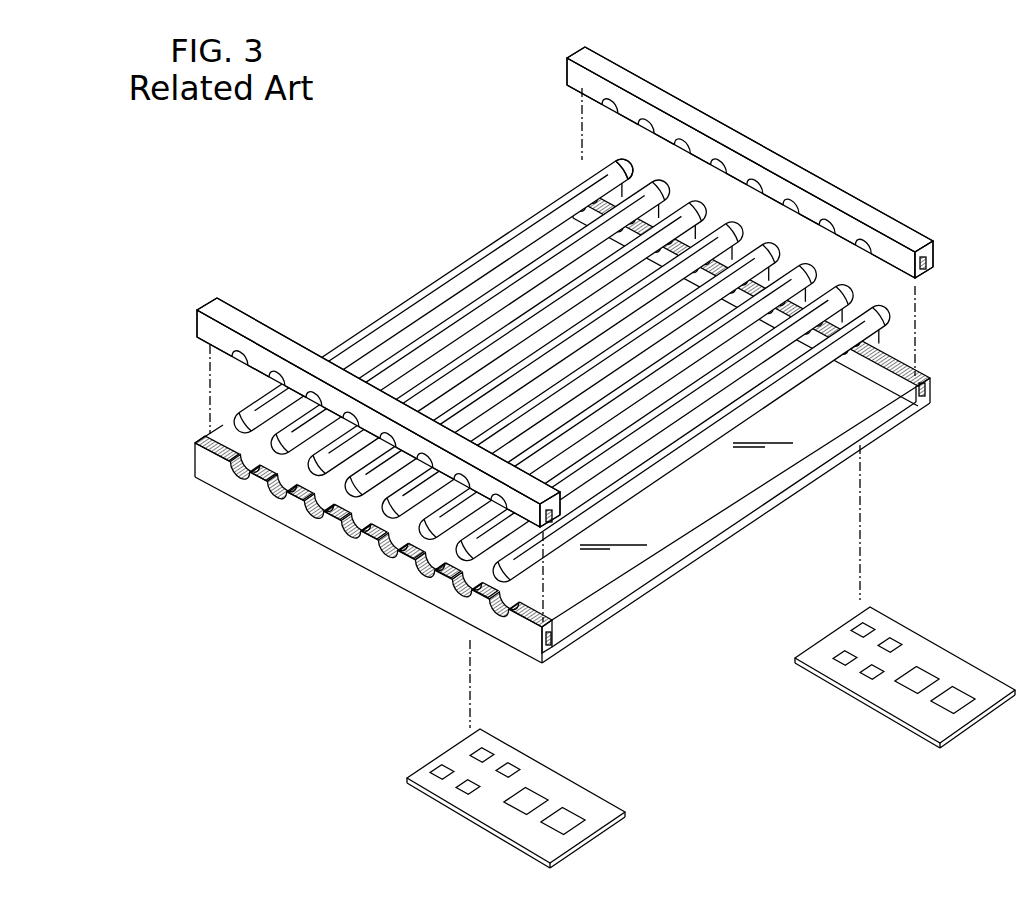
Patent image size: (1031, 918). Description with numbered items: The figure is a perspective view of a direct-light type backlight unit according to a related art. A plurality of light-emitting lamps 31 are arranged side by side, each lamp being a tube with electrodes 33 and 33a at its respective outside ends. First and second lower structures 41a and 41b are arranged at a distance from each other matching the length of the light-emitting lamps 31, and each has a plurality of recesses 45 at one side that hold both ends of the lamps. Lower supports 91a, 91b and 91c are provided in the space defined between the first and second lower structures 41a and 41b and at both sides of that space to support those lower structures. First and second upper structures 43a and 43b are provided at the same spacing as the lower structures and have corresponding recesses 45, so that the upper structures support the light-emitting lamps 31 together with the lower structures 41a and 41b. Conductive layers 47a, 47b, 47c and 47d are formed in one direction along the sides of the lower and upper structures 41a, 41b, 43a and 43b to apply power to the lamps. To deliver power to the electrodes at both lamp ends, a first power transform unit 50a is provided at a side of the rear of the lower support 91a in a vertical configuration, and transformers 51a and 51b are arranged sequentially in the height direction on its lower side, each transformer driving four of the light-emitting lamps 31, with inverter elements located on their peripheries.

The light-emitting lamp 31 is at (470, 262).
The electrode 33 is at (236, 412).
The electrode 33a is at (582, 168).
The first lower structure 41a is at (360, 560).
The second lower structure 41b is at (904, 364).
The first upper structure 43a is at (262, 332).
The second upper structure 43b is at (742, 135).
The recess 45 is at (608, 108).
The conductive layer 47a is at (553, 644).
The conductive layer 47b is at (930, 390).
The conductive layer 47c is at (553, 522).
The conductive layer 47d is at (928, 268).
The first power transform unit 50a is at (496, 830).
The transformer 51a is at (565, 815).
The transformer 51b is at (533, 795).
The lower support 91a is at (673, 505).
The lower support 91b is at (236, 437).
The lower support 91c is at (780, 494).